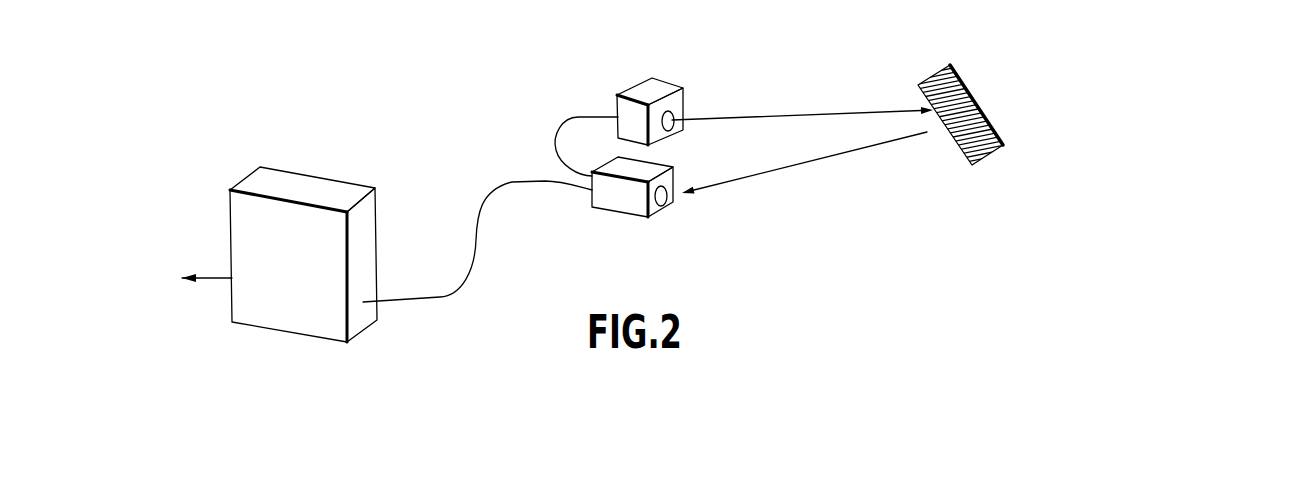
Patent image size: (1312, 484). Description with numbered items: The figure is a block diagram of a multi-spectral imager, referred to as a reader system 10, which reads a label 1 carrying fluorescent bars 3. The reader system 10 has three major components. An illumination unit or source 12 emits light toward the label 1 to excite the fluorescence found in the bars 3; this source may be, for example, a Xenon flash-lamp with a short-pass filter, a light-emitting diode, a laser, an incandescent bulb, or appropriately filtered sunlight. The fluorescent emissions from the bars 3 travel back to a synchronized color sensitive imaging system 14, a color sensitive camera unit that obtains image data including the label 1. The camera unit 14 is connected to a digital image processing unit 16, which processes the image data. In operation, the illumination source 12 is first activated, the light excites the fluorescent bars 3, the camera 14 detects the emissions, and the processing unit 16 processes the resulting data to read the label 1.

The reader system 10 is at (918, 312).
The digital image processing unit 16 is at (315, 190).
The illumination source 12 is at (647, 90).
The color sensitive imaging system 14 is at (612, 202).
The fluorescent bars 3 is at (950, 63).
The label 1 is at (950, 143).